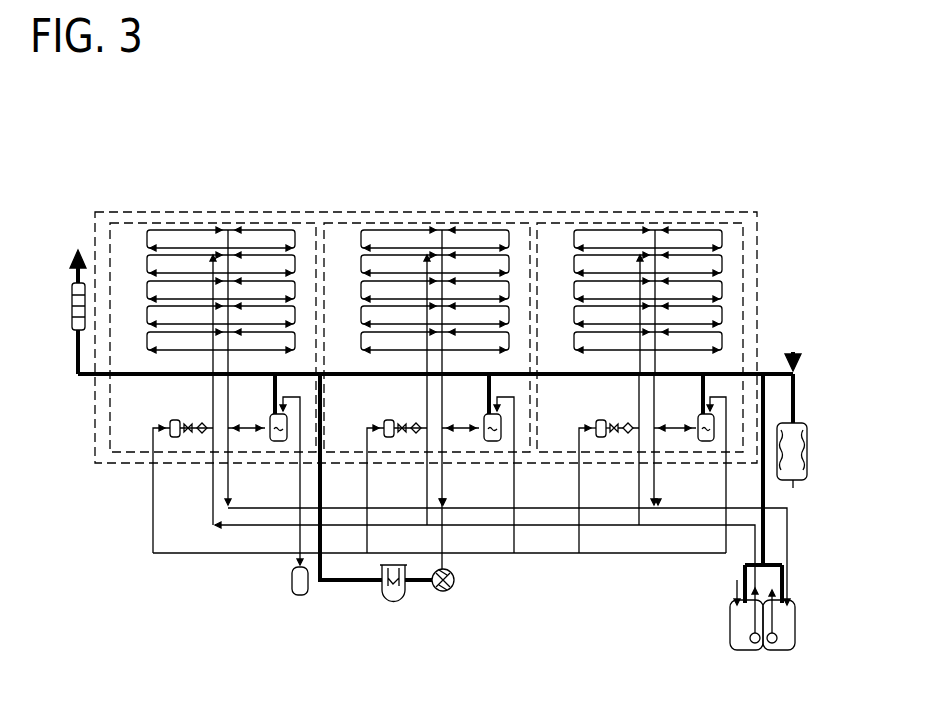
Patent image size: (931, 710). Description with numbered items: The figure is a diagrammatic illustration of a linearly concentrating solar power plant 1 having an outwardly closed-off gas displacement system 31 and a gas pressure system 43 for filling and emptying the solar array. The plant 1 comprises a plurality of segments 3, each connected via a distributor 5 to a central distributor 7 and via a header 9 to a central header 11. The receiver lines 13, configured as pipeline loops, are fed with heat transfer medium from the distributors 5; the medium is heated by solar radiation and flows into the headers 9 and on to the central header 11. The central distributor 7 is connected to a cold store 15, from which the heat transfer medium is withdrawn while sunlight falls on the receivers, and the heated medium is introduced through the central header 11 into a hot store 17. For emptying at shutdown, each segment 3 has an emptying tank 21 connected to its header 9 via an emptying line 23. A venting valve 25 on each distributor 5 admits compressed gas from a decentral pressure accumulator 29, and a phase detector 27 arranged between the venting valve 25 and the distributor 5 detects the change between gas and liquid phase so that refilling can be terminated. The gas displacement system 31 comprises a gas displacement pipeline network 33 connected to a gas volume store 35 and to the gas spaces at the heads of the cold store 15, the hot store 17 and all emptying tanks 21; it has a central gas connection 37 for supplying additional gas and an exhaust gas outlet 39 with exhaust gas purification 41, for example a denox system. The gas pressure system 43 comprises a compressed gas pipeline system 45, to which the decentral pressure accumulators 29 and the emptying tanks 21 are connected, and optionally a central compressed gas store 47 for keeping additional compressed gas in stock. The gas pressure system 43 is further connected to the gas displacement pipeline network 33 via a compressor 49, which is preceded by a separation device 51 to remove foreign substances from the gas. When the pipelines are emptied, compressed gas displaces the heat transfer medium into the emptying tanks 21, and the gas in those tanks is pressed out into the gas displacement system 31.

The linearly concentrating solar power plant 1 is at (780, 190).
The segment 3 is at (258, 223).
The distributor 5 is at (638, 405).
The central distributor 7 is at (528, 527).
The header 9 is at (660, 370).
The central header 11 is at (560, 510).
The receiver lines 13 is at (693, 273).
The cold store 15 is at (728, 613).
The hot store 17 is at (776, 651).
The emptying tank 21 is at (707, 483).
The emptying line 23 is at (675, 462).
The venting valve 25 is at (597, 509).
The phase detector 27 is at (638, 506).
The decentral pressure accumulator 29 is at (584, 409).
The gas displacement system 31 is at (797, 422).
The gas displacement pipeline network 33 is at (553, 368).
The gas volume store 35 is at (804, 482).
The central gas connection 37 is at (793, 350).
The exhaust gas outlet 39 is at (72, 267).
The exhaust gas purification 41 is at (73, 332).
The gas pressure system 43 is at (140, 545).
The compressed gas pipeline system 45 is at (230, 555).
The central compressed gas store 47 is at (300, 596).
The compressor 49 is at (443, 593).
The separation device 51 is at (385, 601).